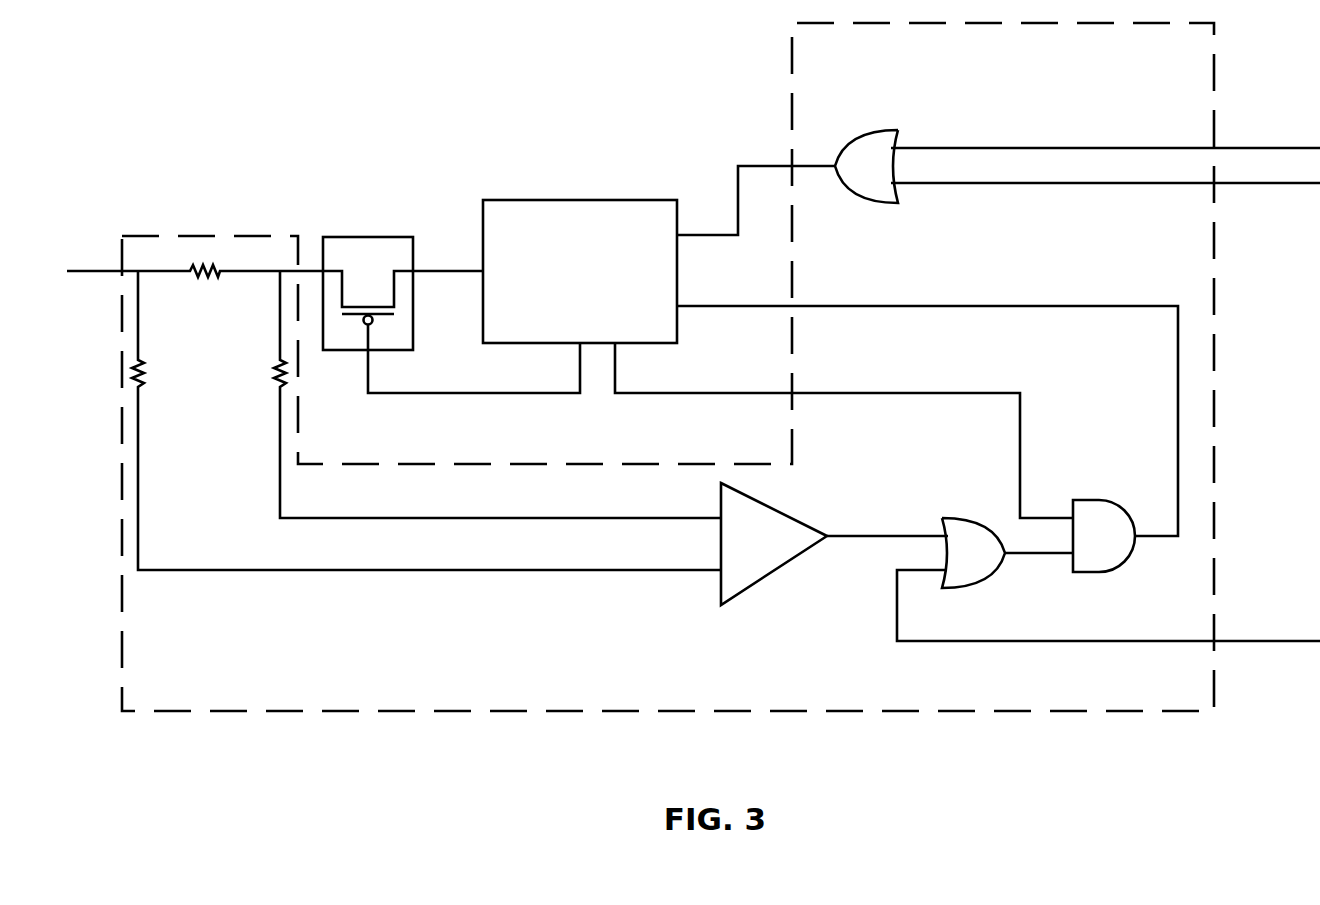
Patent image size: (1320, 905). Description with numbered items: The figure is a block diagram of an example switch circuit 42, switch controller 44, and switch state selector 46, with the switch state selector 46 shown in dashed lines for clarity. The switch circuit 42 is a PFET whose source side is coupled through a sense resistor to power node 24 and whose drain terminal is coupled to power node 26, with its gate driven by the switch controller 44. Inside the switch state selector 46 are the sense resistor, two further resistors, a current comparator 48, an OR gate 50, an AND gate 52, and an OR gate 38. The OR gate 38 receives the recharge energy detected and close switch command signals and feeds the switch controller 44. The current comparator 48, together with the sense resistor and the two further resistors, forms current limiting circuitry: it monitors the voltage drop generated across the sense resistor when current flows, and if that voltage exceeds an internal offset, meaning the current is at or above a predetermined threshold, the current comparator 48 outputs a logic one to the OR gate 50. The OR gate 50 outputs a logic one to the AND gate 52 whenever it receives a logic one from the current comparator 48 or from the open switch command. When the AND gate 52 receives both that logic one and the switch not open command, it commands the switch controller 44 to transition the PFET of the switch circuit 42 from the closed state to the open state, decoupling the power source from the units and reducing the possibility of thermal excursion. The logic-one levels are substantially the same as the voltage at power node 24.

The power node 24 is at (107, 271).
The power node 26 is at (458, 271).
The OR gate 38 is at (847, 180).
The switch circuit 42 is at (368, 237).
The switch controller 44 is at (565, 312).
The switch state selector 46 is at (265, 697).
The current comparator 48 is at (741, 549).
The OR gate 50 is at (960, 563).
The AND gate 52 is at (1085, 546).